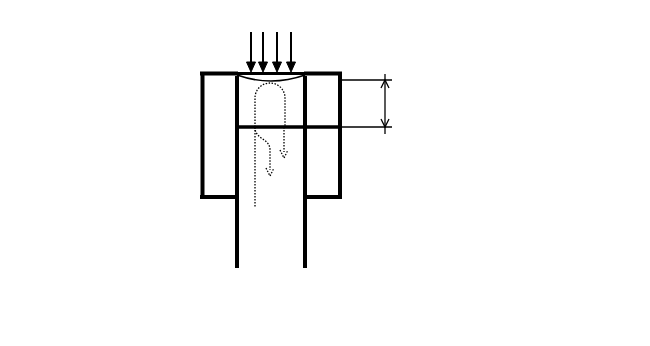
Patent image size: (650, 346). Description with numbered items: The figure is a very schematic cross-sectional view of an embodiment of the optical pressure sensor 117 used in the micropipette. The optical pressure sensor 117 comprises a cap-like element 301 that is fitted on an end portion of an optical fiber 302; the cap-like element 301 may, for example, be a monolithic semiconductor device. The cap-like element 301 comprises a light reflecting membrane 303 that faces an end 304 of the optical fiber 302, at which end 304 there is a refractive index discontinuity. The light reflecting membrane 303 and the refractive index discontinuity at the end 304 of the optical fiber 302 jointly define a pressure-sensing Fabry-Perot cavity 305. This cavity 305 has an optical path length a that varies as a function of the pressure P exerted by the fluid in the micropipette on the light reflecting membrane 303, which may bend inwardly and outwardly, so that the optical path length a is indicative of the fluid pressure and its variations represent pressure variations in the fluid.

The optical pressure sensor 117 is at (78, 28).
The cap-like element 301 is at (218, 111).
The optical fiber 302 is at (292, 248).
The light reflecting membrane 303 is at (248, 74).
The end of the optical fiber 304 is at (296, 128).
The pressure-sensing Fabry-Perot cavity 305 is at (383, 110).